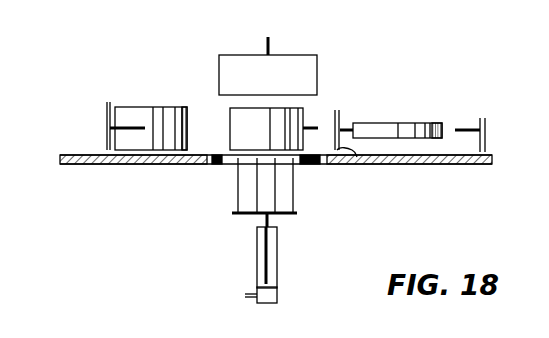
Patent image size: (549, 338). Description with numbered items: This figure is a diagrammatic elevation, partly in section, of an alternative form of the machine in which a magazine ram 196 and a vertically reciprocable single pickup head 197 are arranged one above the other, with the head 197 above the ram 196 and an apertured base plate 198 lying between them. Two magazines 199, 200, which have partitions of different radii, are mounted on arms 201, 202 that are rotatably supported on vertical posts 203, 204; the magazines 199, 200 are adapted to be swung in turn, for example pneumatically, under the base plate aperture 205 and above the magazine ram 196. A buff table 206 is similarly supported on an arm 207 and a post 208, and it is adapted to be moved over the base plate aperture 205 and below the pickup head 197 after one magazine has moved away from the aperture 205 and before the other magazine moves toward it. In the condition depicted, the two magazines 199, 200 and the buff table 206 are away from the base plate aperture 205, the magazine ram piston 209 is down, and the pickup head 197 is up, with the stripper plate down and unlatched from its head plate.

The magazine ram 196 is at (277, 262).
The single pickup head 197 is at (317, 70).
The apertured base plate 198 is at (468, 168).
The magazine 199 is at (140, 108).
The magazine 200 is at (247, 137).
The arm 201 is at (128, 133).
The arm 202 is at (312, 128).
The vertical post 203 is at (107, 107).
The vertical post 204 is at (487, 142).
The base plate aperture 205 is at (310, 160).
The buff table 206 is at (440, 122).
The arm 207 is at (358, 123).
The post 208 is at (370, 165).
The magazine ram piston 209 is at (273, 298).